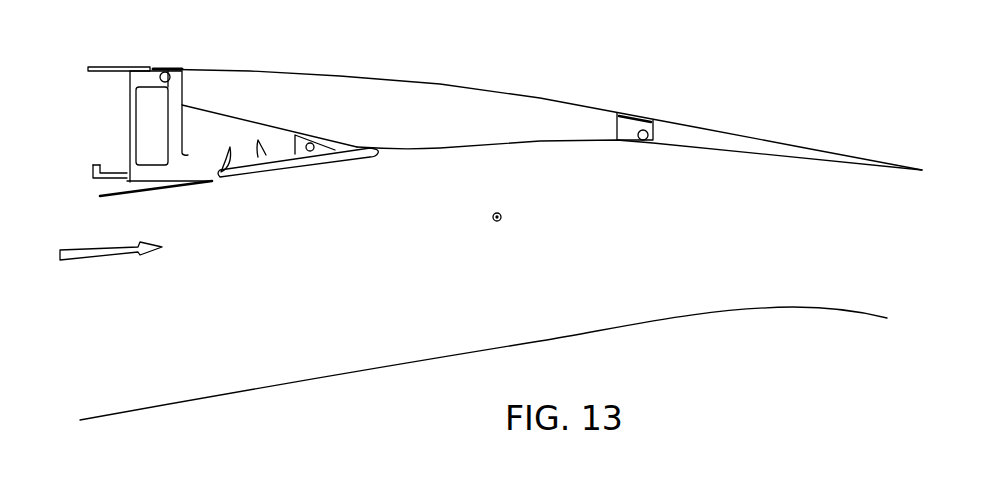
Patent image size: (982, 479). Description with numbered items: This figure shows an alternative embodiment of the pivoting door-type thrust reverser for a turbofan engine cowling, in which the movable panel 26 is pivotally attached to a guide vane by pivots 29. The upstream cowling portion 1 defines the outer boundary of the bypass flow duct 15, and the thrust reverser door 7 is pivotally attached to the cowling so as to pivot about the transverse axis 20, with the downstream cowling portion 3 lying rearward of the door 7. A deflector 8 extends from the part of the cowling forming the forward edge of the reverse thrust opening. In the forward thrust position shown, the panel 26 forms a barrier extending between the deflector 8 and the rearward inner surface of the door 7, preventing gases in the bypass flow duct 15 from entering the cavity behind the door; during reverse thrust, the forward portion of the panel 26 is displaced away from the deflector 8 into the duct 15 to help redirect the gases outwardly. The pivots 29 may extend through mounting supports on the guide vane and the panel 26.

The upstream cowling portion 1 is at (120, 68).
The downstream cowling portion 3 is at (728, 139).
The thrust reverser door 7 is at (271, 81).
The deflector 8 is at (210, 184).
The bypass flow duct 15 is at (483, 311).
The transverse axis 20 is at (497, 222).
The movable panel 26 is at (345, 158).
The pivots 29 is at (310, 152).